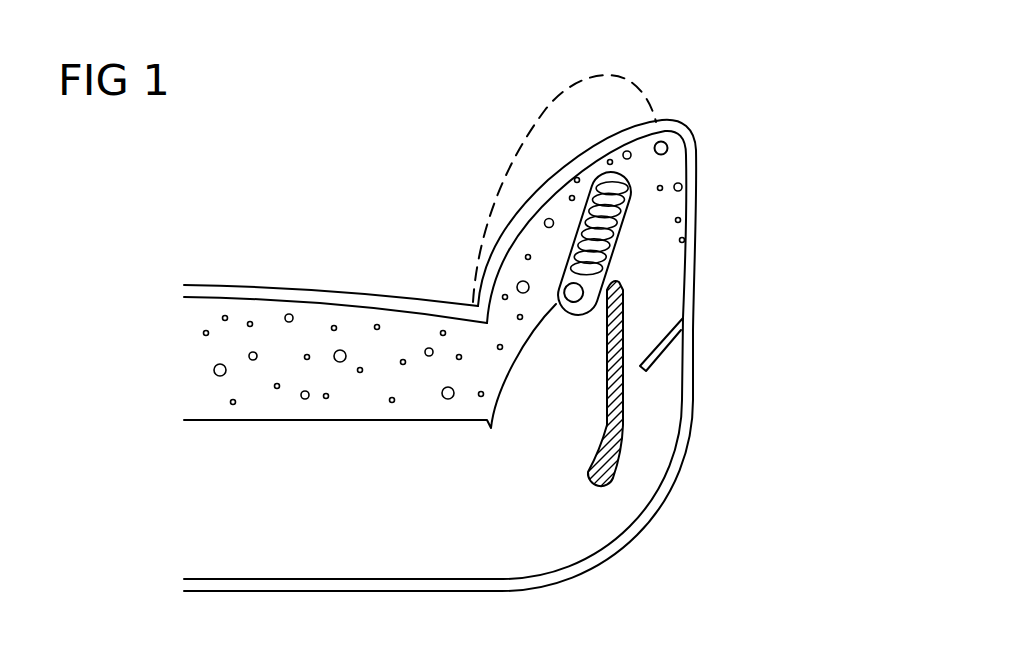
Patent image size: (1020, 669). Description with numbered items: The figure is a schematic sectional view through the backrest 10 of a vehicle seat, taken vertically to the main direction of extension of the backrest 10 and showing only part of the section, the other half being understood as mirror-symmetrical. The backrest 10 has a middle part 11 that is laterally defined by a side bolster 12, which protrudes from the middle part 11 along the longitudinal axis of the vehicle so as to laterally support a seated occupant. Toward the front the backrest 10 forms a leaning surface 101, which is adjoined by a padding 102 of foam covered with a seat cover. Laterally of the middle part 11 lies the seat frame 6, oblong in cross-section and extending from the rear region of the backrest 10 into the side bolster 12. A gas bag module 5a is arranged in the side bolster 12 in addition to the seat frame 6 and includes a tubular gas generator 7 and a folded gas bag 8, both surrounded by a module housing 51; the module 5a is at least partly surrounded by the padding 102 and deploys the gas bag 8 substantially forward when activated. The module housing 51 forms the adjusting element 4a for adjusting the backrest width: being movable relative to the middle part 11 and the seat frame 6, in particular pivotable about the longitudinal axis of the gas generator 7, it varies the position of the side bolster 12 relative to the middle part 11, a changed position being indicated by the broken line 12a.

The backrest 10 is at (620, 577).
The middle part 11 is at (322, 306).
The leaning surface 101 is at (287, 296).
The padding 102 is at (218, 351).
The side bolster 12 is at (627, 189).
The broken line 12a is at (558, 79).
The gas bag 8 is at (580, 223).
The gas generator 7 is at (574, 293).
The gas bag module 5a is at (643, 164).
The module housing 51 is at (599, 228).
The adjusting element 4a is at (666, 243).
The seat frame 6 is at (618, 452).